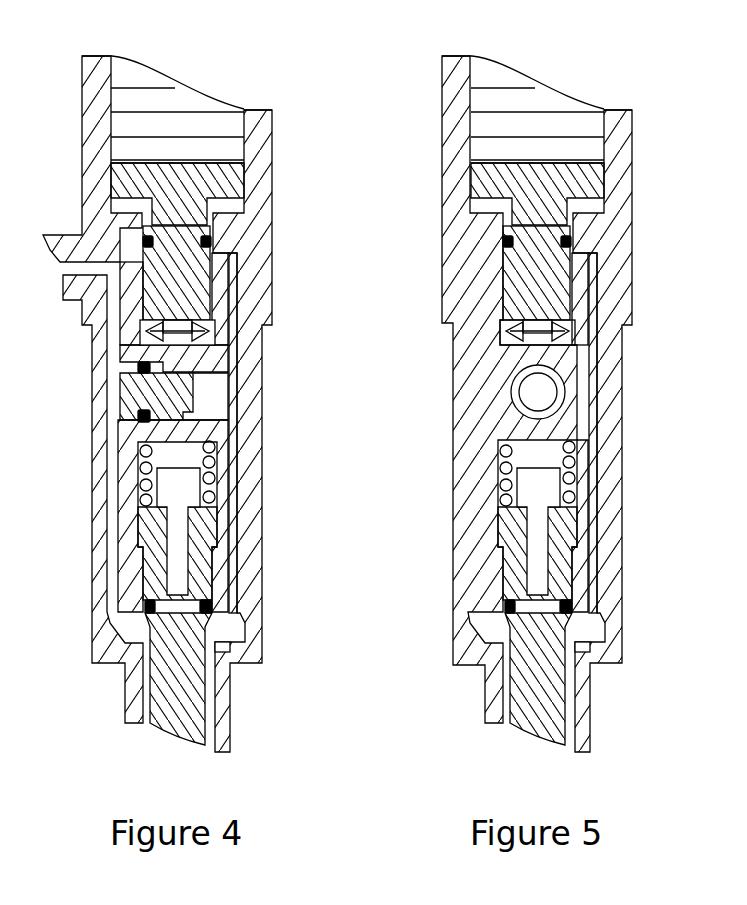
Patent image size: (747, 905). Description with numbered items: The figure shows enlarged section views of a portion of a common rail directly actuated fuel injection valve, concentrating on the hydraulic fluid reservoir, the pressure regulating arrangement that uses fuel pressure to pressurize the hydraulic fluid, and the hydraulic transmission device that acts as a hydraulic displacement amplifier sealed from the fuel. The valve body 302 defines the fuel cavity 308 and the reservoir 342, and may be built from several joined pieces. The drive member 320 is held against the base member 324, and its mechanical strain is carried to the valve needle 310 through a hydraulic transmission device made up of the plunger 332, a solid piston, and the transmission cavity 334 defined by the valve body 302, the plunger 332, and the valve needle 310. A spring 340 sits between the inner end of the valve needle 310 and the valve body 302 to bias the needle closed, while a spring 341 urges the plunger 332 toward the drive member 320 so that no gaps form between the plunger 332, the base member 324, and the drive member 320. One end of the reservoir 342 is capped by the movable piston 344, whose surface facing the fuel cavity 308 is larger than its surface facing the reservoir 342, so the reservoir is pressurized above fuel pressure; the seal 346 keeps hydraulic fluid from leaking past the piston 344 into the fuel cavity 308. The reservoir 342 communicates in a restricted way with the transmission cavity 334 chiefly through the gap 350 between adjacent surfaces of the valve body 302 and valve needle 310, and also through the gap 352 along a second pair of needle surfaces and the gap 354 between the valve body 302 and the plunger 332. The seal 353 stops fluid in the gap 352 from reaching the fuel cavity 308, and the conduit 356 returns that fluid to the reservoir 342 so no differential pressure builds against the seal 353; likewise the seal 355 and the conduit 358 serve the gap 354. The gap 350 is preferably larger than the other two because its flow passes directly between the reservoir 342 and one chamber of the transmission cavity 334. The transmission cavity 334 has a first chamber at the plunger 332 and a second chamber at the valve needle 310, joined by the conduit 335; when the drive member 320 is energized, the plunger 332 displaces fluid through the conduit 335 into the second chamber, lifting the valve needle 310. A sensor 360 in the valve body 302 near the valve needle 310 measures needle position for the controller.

In FIG. 4, the valve body 302 is at (222, 672).
In FIG. 5, the valve body 302 is at (482, 660).
In FIG. 4, the fuel cavity 308 is at (118, 413).
In FIG. 4, the valve needle 310 is at (178, 713).
In FIG. 4, the drive member 320 is at (190, 104).
In FIG. 5, the drive member 320 is at (540, 108).
In FIG. 4, the base member 324 is at (218, 178).
In FIG. 5, the base member 324 is at (497, 222).
In FIG. 4, the plunger 332 is at (190, 272).
In FIG. 4, the transmission cavity 334 is at (216, 338).
In FIG. 5, the transmission cavity 334 is at (538, 338).
In FIG. 5, the conduit 335 is at (587, 430).
In FIG. 4, the spring 340 is at (212, 470).
In FIG. 5, the spring 340 is at (507, 467).
In FIG. 4, the spring 341 is at (200, 325).
In FIG. 4, the reservoir 342 is at (222, 393).
In FIG. 5, the reservoir 342 is at (540, 392).
In FIG. 4, the movable piston 344 is at (140, 376).
In FIG. 4, the seal 346 is at (128, 352).
In FIG. 4, the gap 350 is at (127, 520).
In FIG. 4, the gap 352 is at (222, 540).
In FIG. 4, the seal 353 is at (210, 606).
In FIG. 4, the gap 354 is at (222, 292).
In FIG. 4, the seal 355 is at (150, 240).
In FIG. 5, the seal 355 is at (502, 237).
In FIG. 4, the conduit 356 is at (218, 577).
In FIG. 4, the conduit 358 is at (208, 240).
In FIG. 4, the sensor 360 is at (225, 648).